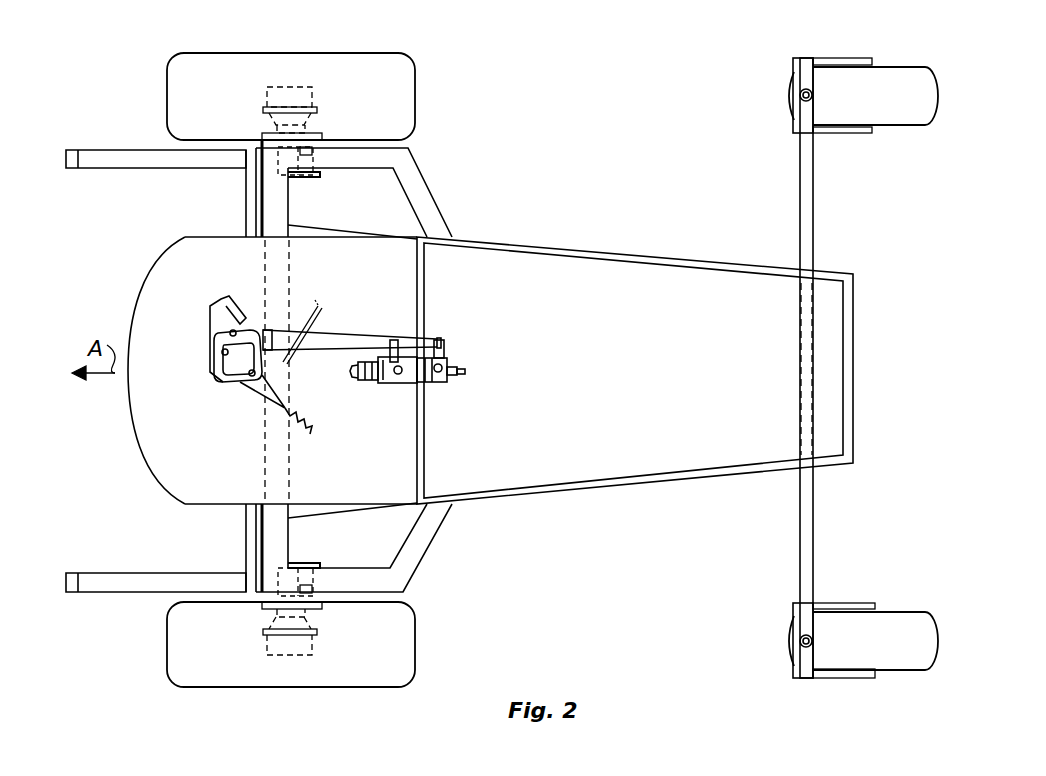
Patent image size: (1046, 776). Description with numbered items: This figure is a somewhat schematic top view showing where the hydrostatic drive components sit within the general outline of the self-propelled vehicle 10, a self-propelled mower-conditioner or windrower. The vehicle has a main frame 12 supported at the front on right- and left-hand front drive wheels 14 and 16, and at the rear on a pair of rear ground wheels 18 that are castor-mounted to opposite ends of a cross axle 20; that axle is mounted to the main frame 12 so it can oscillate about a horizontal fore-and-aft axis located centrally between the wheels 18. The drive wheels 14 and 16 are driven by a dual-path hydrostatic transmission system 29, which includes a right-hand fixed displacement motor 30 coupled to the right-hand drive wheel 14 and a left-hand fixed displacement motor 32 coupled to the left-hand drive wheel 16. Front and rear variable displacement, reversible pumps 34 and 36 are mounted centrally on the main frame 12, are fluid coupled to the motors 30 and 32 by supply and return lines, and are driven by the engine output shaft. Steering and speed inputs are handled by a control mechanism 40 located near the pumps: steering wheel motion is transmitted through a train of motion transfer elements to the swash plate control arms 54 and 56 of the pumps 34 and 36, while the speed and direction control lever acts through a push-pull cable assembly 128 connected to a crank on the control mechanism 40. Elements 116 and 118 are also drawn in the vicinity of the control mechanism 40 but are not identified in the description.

The self-propelled vehicle 10 is at (645, 147).
The main frame 12 is at (432, 192).
The right-hand front drive wheel 14 is at (414, 74).
The left-hand front drive wheel 16 is at (417, 632).
The rear ground wheels 18 is at (892, 133).
The cross axle 20 is at (800, 188).
The dual-path hydrostatic transmission system 29 is at (465, 331).
The right-hand fixed displacement motor 30 is at (325, 156).
The left-hand fixed displacement motor 32 is at (323, 583).
The front variable displacement reversible pump 34 is at (380, 386).
The rear variable displacement reversible pump 36 is at (437, 388).
The control mechanism 40 is at (280, 317).
The swash plate control arm 54 is at (377, 337).
The swash plate control arm 56 is at (440, 345).
The link 116 is at (390, 337).
The spring strut 118 is at (325, 352).
The push-pull cable assembly 128 is at (320, 308).